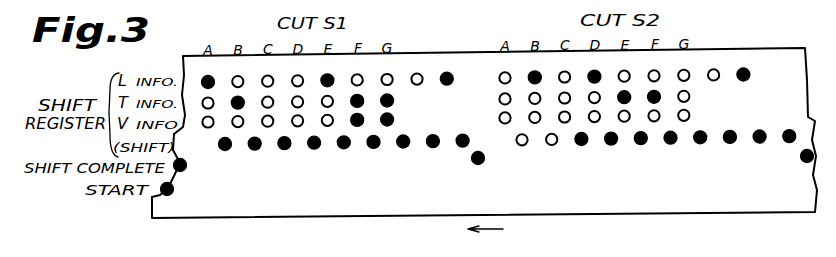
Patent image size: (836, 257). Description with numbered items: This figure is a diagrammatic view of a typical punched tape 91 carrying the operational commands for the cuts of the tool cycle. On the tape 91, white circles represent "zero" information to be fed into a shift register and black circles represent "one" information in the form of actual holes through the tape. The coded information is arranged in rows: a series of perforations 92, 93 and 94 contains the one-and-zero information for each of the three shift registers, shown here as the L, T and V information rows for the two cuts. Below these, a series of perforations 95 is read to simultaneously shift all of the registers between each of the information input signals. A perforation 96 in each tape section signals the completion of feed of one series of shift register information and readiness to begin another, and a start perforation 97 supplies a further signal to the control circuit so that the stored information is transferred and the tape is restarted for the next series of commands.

The punched tape 91 is at (284, 217).
The series of perforations 92 is at (262, 78).
The series of perforations 93 is at (394, 100).
The series of perforations 94 is at (394, 120).
The series of perforations for shifting 95 is at (258, 148).
The tape perforation 96 is at (185, 165).
The tape perforation 97 is at (172, 190).